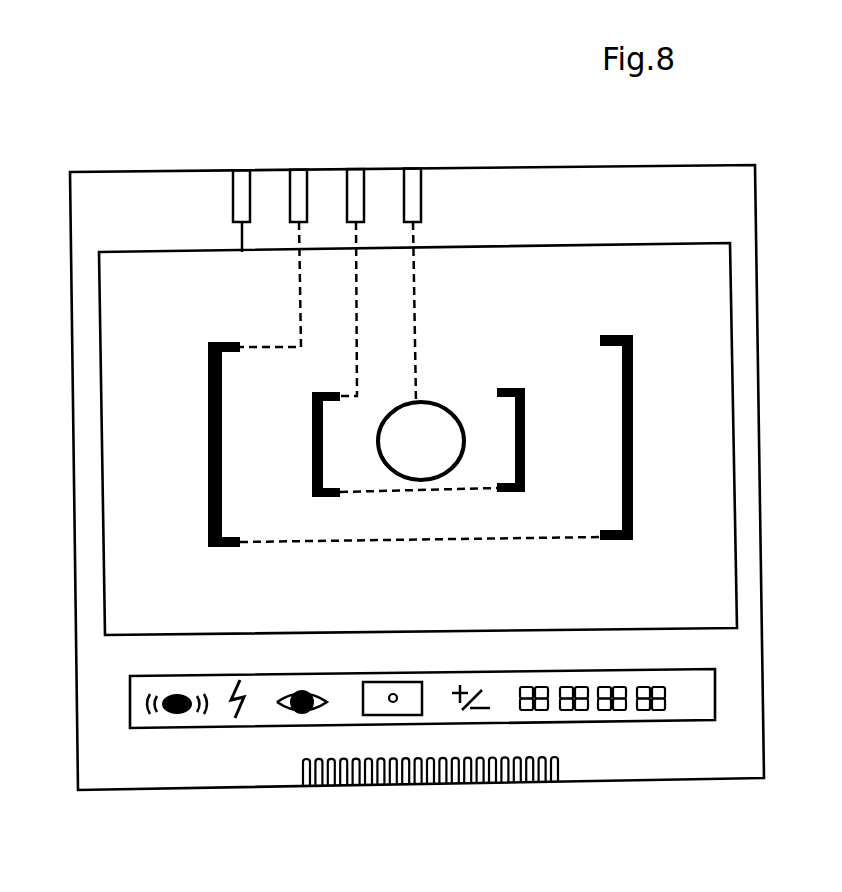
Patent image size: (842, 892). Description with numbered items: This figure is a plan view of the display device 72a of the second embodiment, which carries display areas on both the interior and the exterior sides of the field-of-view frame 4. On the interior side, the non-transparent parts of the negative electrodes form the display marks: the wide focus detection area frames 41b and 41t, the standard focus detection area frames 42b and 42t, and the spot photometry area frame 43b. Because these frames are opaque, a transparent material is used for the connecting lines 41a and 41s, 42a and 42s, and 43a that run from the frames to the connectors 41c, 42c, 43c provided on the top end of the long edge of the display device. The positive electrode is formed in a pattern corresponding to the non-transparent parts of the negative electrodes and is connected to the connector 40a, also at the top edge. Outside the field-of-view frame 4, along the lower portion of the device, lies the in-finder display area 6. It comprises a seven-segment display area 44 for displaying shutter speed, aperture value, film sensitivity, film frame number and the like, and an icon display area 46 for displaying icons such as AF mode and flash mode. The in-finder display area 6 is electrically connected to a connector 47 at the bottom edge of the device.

The viewfinder field 72a is at (777, 240).
The field-of-view frame 4 is at (730, 312).
The indicator slot 40a is at (245, 180).
The connector 41c is at (297, 180).
The connector 42c is at (355, 180).
The connector 43c is at (413, 180).
The connecting line 41a is at (300, 262).
The connecting line 42a is at (357, 273).
The connecting line 43a is at (415, 273).
The wide focus detection area frame 41b is at (208, 413).
The standard focus detection area frame 42b is at (312, 435).
The spot photometry area frame 43b is at (378, 448).
The standard focus detection area frame 42t is at (525, 440).
The wide focus detection area frame 41t is at (633, 410).
The connecting line 42s is at (392, 488).
The connecting line 41s is at (397, 538).
The in-finder display area 6 is at (715, 693).
The icon display area 46 is at (260, 715).
The 7-segment display area 44 is at (632, 712).
The connector 47 is at (558, 792).